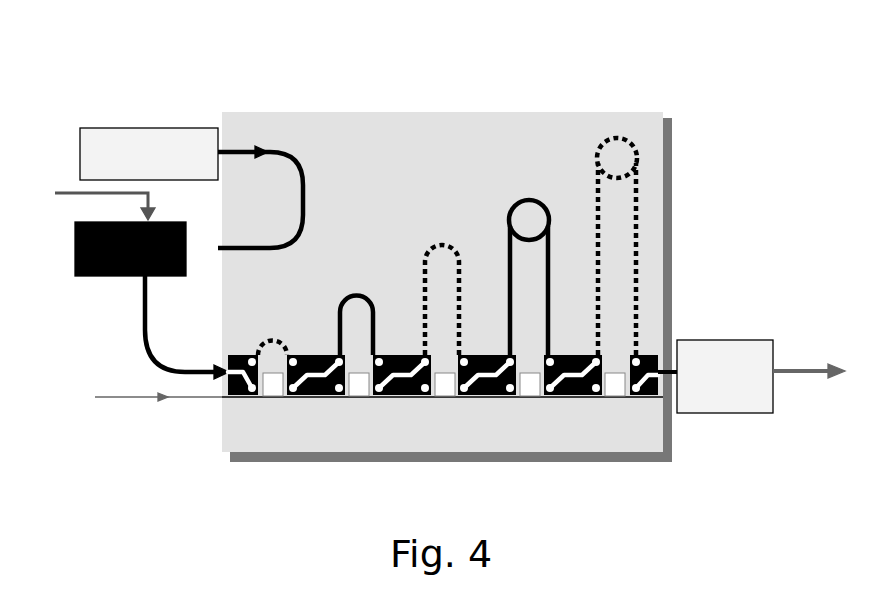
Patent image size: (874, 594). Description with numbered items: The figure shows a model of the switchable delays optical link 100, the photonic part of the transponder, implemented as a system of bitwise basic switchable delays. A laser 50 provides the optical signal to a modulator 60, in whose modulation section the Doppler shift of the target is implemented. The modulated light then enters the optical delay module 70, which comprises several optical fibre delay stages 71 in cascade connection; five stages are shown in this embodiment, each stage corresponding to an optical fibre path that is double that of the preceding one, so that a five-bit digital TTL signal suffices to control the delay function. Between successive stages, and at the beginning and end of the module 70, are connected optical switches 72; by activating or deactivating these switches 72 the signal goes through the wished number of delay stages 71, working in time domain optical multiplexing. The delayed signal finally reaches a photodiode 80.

The optical link 100 is at (533, 63).
The laser 50 is at (151, 128).
The modulator 60 is at (75, 244).
The optical delay module 70 is at (592, 443).
The delay stages 71 is at (598, 143).
The optical switches 72 is at (225, 395).
The photodiode 80 is at (753, 405).